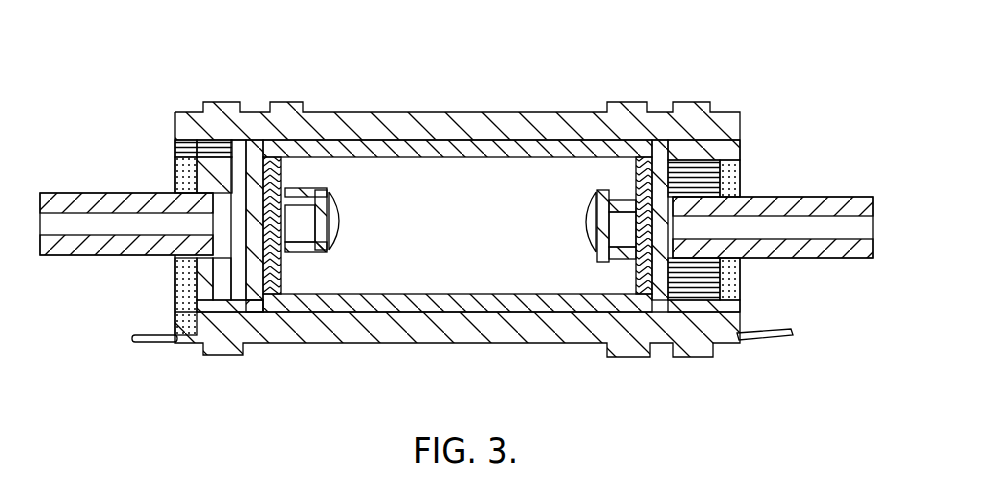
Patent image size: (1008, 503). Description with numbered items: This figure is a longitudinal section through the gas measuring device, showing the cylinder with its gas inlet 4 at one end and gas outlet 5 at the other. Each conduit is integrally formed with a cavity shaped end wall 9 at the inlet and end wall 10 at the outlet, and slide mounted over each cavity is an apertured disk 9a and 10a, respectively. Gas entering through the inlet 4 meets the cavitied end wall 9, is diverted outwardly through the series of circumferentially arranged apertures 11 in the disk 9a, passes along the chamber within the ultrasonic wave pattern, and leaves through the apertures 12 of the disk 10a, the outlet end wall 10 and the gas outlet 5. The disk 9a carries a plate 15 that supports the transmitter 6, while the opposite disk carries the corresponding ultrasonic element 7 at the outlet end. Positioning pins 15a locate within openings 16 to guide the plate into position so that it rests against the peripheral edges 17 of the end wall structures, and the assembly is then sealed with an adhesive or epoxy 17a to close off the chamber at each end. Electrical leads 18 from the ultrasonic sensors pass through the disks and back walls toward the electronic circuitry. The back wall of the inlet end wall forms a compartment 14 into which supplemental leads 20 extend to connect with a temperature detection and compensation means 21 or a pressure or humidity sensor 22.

The gas inlet 4 is at (95, 256).
The gas outlet 5 is at (813, 260).
The transmitter 6 is at (345, 244).
The right valve disc 7 is at (580, 243).
The cavity shaped end wall 9 is at (200, 280).
The apertured disk 9a is at (262, 325).
The cavity shaped end wall 10 is at (735, 288).
The apertured disk 10a is at (677, 315).
The apertures 11 is at (254, 138).
The apertures 12 is at (667, 140).
The compartment 14 is at (225, 194).
The plate 15 is at (287, 182).
The positioning pins 15a is at (222, 312).
The openings 16 is at (178, 121).
The peripheral edges 17 is at (232, 140).
The adhesive or epoxy 17a is at (178, 297).
The electrical leads 18 is at (150, 343).
The supplemental leads 20 is at (200, 157).
The temperature detection and compensation means 21 is at (228, 142).
The pressure or humidity sensor 22 is at (690, 155).